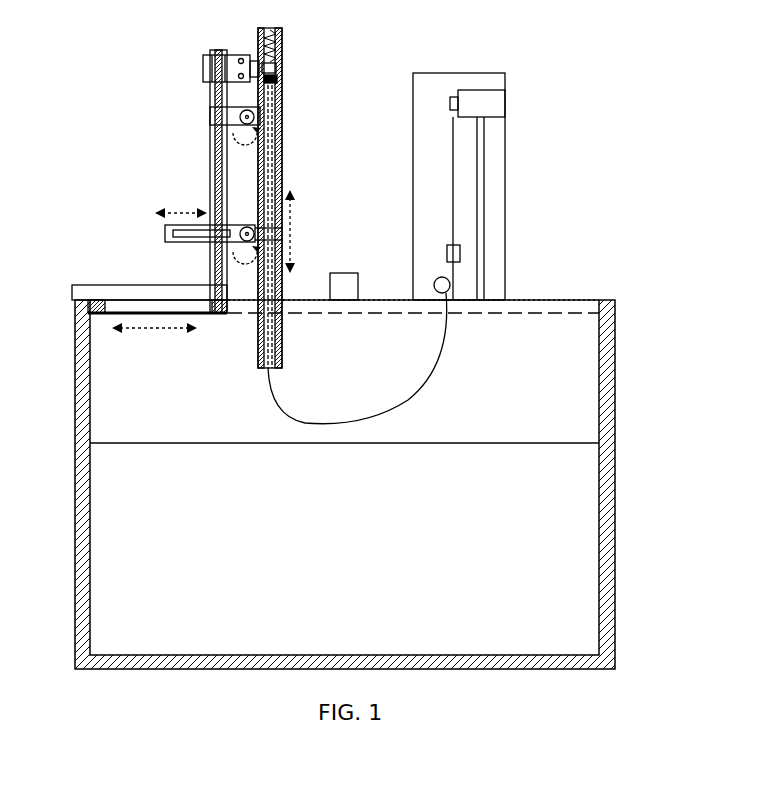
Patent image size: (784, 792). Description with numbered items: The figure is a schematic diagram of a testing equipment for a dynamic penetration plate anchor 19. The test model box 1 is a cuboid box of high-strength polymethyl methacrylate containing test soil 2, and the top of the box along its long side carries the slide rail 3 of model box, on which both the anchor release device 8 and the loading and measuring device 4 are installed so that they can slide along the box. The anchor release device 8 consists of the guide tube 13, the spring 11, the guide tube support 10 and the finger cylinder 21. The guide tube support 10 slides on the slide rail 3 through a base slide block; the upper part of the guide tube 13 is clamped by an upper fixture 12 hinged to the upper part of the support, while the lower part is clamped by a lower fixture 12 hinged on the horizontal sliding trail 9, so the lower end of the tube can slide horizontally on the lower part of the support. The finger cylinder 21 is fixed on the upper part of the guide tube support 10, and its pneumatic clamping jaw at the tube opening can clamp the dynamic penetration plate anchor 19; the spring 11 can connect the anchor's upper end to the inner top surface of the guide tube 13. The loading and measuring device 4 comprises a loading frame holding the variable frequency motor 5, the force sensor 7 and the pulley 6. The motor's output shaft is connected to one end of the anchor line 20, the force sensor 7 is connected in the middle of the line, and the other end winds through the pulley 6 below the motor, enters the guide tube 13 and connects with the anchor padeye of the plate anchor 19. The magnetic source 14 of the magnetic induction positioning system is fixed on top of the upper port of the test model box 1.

The test model box 1 is at (616, 603).
The test soil 2 is at (572, 463).
The slide rail of model box 3 is at (612, 302).
The loading and measuring device 4 is at (506, 180).
The variable frequency motor 5 is at (488, 103).
The pulley 6 is at (450, 287).
The force sensor 7 is at (460, 254).
The anchor release device 8 is at (72, 293).
The horizontal sliding trail 9 is at (165, 232).
The guide tube support 10 is at (210, 117).
The spring 11 is at (283, 36).
The fixture 12 is at (255, 117).
The guide tube 13 is at (283, 160).
The magnetic source 14 is at (344, 273).
The dynamic penetration plate anchor 19 is at (283, 73).
The anchor line 20 is at (446, 357).
The finger cylinder 21 is at (203, 69).